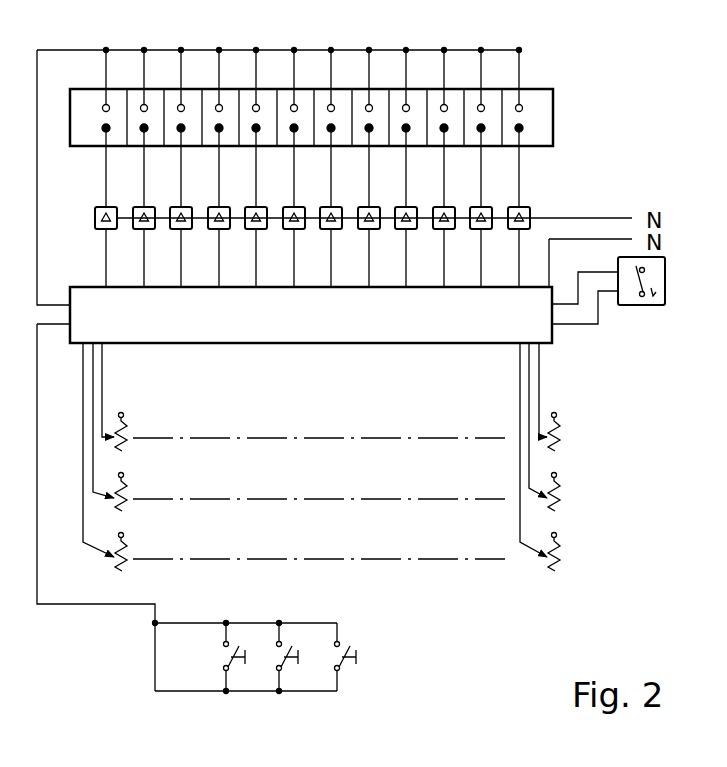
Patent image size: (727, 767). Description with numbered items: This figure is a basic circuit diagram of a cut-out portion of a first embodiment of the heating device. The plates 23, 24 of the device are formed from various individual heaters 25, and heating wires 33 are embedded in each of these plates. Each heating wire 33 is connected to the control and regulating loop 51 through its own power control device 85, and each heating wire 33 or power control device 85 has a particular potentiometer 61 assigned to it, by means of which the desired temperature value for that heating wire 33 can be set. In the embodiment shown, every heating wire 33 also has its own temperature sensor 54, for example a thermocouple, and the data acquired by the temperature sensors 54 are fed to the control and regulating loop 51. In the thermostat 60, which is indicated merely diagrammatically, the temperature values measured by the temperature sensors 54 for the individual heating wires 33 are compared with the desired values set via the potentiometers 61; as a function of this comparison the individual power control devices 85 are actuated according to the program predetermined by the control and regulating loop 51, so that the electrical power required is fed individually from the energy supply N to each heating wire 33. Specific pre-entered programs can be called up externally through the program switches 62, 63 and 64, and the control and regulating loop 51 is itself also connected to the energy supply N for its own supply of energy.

The plate 23 is at (271, 64).
The plate 24 is at (312, 146).
The individual heater 25 is at (88, 108).
The temperature sensor 54 is at (522, 106).
The heating wire 33 is at (523, 130).
The power control device 85 is at (529, 212).
The control and regulating loop 51 is at (317, 328).
The thermostat 60 is at (647, 307).
The potentiometer 61 is at (134, 418).
The program switch 62 is at (343, 668).
The program switch 63 is at (285, 668).
The program switch 64 is at (232, 668).